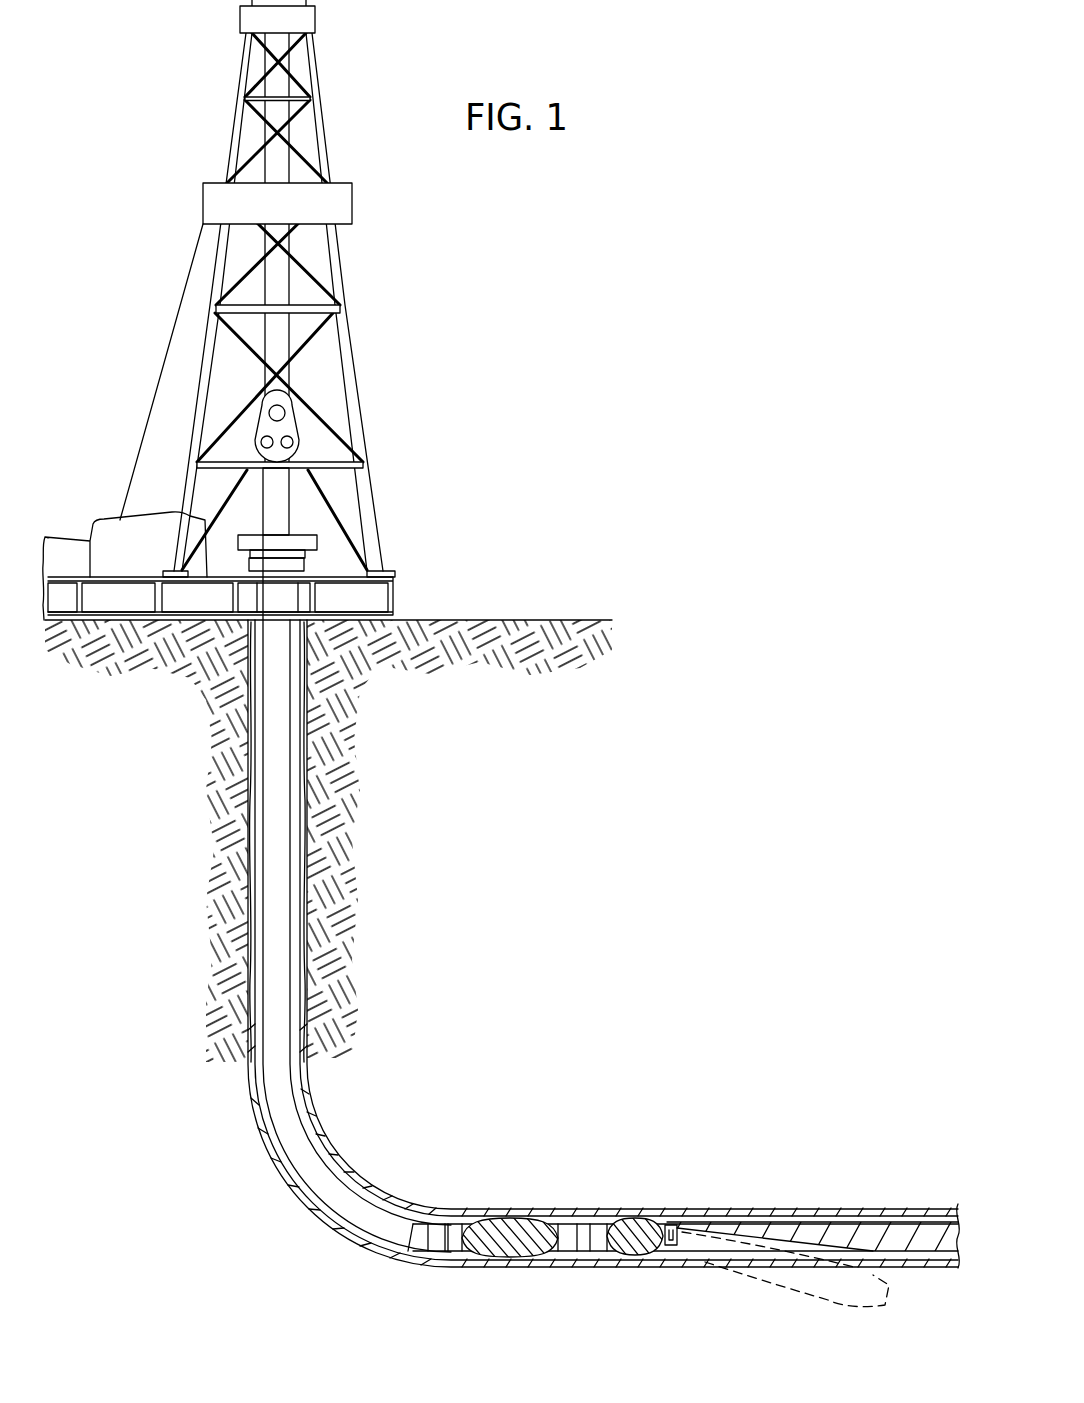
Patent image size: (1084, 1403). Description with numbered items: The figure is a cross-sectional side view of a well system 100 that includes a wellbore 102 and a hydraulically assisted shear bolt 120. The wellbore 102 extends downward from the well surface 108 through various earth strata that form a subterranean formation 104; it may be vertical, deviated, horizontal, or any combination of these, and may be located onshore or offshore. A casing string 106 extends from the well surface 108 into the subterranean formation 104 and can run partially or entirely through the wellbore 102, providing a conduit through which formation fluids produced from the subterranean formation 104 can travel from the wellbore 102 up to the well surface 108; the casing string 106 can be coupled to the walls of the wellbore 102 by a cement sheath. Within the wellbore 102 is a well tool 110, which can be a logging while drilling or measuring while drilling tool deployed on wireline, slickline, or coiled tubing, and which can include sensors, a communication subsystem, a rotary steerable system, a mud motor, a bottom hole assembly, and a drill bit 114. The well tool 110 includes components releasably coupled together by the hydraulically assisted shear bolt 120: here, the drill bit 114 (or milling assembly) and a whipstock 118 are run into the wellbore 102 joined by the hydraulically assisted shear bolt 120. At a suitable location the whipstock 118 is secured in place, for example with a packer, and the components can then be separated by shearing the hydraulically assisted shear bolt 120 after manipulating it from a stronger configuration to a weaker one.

The well system 100 is at (407, 358).
The wellbore 102 is at (308, 865).
The subterranean formation 104 is at (365, 805).
The casing string 106 is at (248, 908).
The well surface 108 is at (318, 541).
The well tool 110 is at (270, 757).
The drill bit 114 is at (665, 1252).
The whipstock 118 is at (860, 1222).
The hydraulically assisted shear bolt 120 is at (668, 1225).